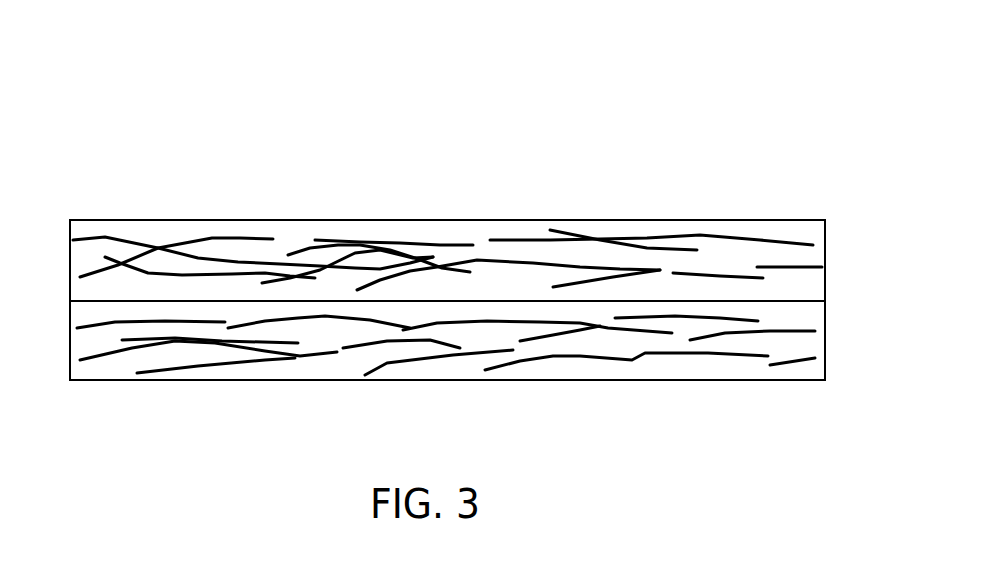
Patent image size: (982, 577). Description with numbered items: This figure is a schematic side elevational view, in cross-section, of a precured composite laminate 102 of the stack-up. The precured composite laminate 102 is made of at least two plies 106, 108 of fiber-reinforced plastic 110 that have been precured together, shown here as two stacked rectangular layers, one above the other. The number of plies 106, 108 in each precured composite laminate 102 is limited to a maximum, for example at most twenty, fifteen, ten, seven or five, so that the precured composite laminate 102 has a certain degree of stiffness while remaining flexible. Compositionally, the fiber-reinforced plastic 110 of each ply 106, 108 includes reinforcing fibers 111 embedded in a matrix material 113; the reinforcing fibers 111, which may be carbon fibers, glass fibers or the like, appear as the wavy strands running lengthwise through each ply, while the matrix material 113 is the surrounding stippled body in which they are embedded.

The precured composite laminate 102 is at (796, 78).
The ply 106 is at (826, 260).
The ply 108 is at (826, 343).
The fiber-reinforced plastic 110 is at (780, 229).
The reinforcing fibers 111 is at (212, 238).
The matrix material 113 is at (520, 250).